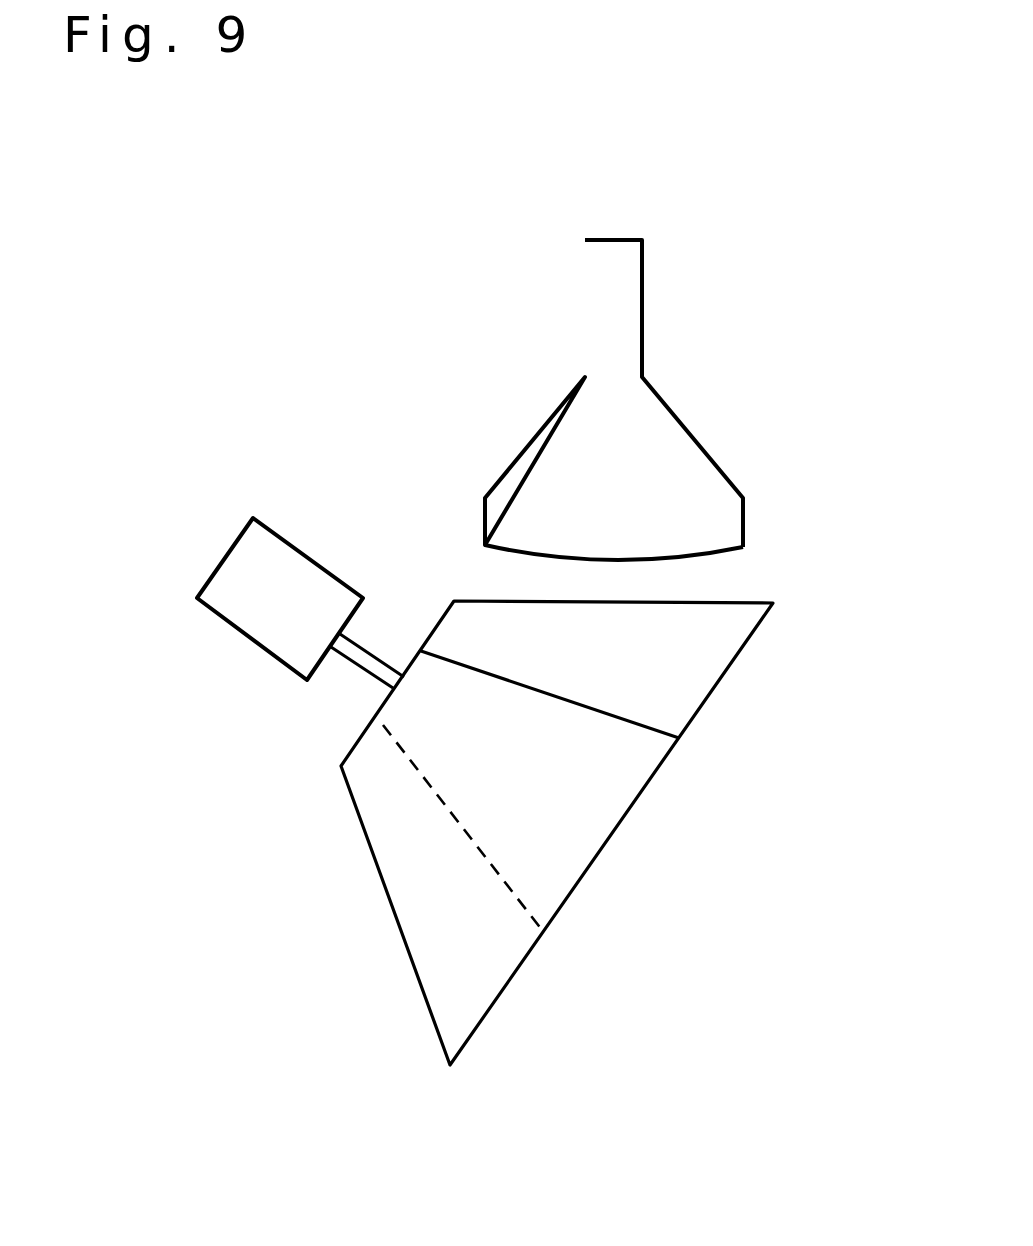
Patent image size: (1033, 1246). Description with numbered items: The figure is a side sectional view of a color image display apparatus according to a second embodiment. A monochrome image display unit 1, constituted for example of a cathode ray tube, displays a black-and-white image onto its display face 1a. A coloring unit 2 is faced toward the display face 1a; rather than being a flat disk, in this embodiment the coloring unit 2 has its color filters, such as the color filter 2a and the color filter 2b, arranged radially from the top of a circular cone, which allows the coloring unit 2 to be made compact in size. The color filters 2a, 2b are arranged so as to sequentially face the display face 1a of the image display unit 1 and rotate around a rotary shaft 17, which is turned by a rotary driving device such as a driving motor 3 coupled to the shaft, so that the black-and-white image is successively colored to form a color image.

The monochrome image display unit 1 is at (683, 422).
The display face 1a is at (693, 558).
The color unit 2 is at (693, 722).
The color filter 2a is at (718, 648).
The color filter 2b is at (572, 851).
The driving motor 3 is at (302, 552).
The rotary shaft 17 is at (355, 665).